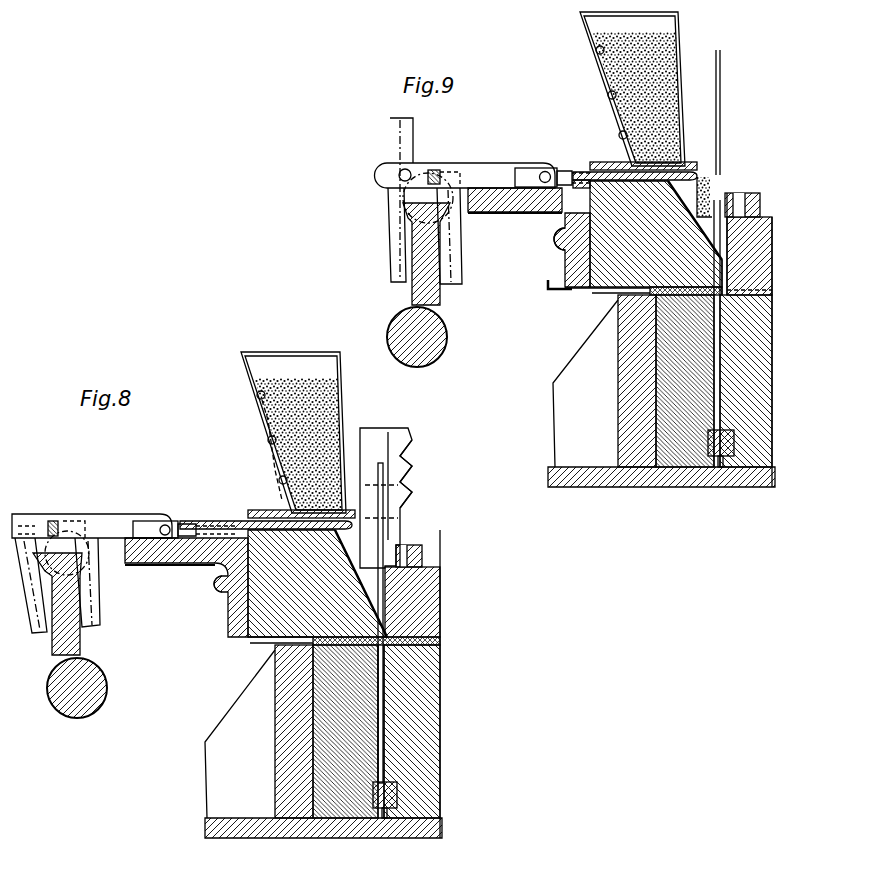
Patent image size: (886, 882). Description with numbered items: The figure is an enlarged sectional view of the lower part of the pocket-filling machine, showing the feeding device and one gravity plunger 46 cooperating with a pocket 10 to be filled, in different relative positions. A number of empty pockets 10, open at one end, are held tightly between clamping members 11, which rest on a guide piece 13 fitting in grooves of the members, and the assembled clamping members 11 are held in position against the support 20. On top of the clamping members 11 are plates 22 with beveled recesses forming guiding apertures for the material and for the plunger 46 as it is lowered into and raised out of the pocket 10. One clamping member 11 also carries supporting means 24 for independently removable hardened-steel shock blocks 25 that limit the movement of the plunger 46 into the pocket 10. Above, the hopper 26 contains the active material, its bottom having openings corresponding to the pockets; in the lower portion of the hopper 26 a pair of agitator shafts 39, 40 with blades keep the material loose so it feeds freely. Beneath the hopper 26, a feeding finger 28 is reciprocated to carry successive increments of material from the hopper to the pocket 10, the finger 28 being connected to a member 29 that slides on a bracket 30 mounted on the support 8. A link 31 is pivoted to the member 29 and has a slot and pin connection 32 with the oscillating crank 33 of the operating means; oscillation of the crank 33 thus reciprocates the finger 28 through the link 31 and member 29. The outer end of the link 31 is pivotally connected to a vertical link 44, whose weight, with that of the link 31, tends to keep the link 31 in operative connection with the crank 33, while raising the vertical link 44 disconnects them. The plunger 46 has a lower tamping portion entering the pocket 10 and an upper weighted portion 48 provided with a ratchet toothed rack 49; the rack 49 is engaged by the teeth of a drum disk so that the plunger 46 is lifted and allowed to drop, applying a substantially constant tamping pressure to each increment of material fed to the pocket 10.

In FIG. 8, the support 8 is at (216, 600).
In FIG. 9, the support 8 is at (565, 273).
In FIG. 8, the pocket 10 is at (442, 668).
In FIG. 9, the pocket 10 is at (695, 343).
In FIG. 8, the clamping member 11 is at (335, 848).
In FIG. 9, the clamping member 11 is at (661, 449).
In FIG. 8, the guide piece 13 is at (424, 793).
In FIG. 9, the guide piece 13 is at (720, 484).
In FIG. 8, the support 20 is at (272, 702).
In FIG. 9, the support 20 is at (585, 383).
In FIG. 8, the plate 22 is at (275, 645).
In FIG. 9, the plate 22 is at (646, 238).
In FIG. 8, the supporting means 24 is at (442, 562).
In FIG. 9, the supporting means 24 is at (749, 256).
In FIG. 8, the shock block 25 is at (410, 545).
In FIG. 9, the shock block 25 is at (742, 191).
In FIG. 8, the hopper 26 is at (243, 362).
In FIG. 9, the hopper 26 is at (582, 34).
In FIG. 8, the feeding finger 28 is at (212, 513).
In FIG. 9, the feeding finger 28 is at (586, 170).
In FIG. 8, the member 29 is at (162, 522).
In FIG. 9, the member 29 is at (548, 168).
In FIG. 8, the bracket 30 is at (170, 565).
In FIG. 9, the bracket 30 is at (525, 213).
In FIG. 8, the link 31 is at (142, 520).
In FIG. 9, the link 31 is at (512, 168).
In FIG. 8, the slot and pin connection 32 is at (56, 521).
In FIG. 9, the slot and pin connection 32 is at (440, 170).
In FIG. 8, the oscillating crank 33 is at (88, 649).
In FIG. 9, the oscillating crank 33 is at (439, 285).
In FIG. 8, the agitator shaft 39 is at (290, 484).
In FIG. 9, the agitator shaft 39 is at (651, 189).
In FIG. 8, the agitator shaft 40 is at (268, 432).
In FIG. 9, the vertical link 44 is at (421, 198).
In FIG. 9, the plunger 46 is at (728, 102).
In FIG. 8, the weighted portion 48 is at (378, 428).
In FIG. 8, the ratchet toothed rack 49 is at (409, 452).